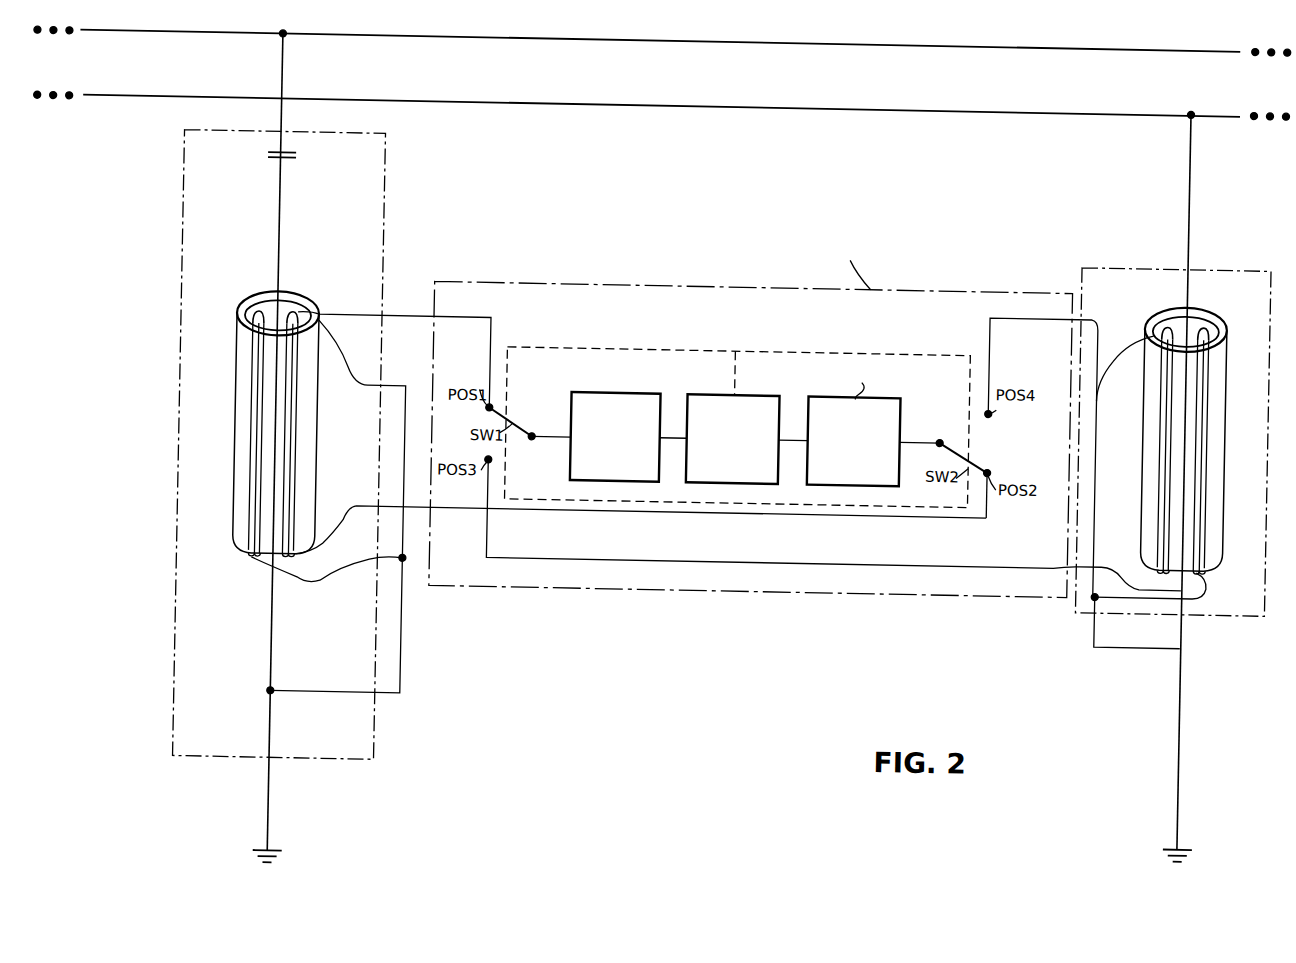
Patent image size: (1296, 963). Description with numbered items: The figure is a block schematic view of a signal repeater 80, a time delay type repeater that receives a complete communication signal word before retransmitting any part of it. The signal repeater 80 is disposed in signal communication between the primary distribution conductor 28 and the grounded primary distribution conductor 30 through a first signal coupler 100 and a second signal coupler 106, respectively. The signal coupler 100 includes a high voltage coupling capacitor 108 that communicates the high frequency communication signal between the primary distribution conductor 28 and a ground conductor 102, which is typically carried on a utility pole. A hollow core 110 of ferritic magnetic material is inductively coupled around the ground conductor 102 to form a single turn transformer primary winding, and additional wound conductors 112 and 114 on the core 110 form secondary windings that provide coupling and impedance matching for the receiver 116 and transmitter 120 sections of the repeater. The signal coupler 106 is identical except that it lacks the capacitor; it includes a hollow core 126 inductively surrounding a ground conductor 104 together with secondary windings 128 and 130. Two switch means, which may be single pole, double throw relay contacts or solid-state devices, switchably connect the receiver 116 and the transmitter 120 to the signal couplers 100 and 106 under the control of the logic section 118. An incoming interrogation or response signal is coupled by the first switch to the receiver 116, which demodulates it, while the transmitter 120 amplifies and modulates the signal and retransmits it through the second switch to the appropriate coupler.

The primary distribution conductor 28 is at (481, 27).
The grounded primary distribution conductor 30 is at (485, 93).
The signal repeater 80 is at (714, 276).
The signal coupler 100 is at (187, 458).
The ground conductor 102 is at (287, 180).
The ground conductor 104 is at (1193, 156).
The signal coupler 106 is at (1094, 592).
The high voltage coupling capacitor 108 is at (300, 149).
The hollow core 110 is at (244, 486).
The wound conductor 112 is at (380, 310).
The wound conductor 114 is at (345, 519).
The receiver 116 is at (638, 441).
The logic section 118 is at (754, 439).
The transmitter 120 is at (875, 437).
The hollow core 126 is at (1176, 292).
The secondary winding 128 is at (1096, 303).
The secondary winding 130 is at (1100, 550).